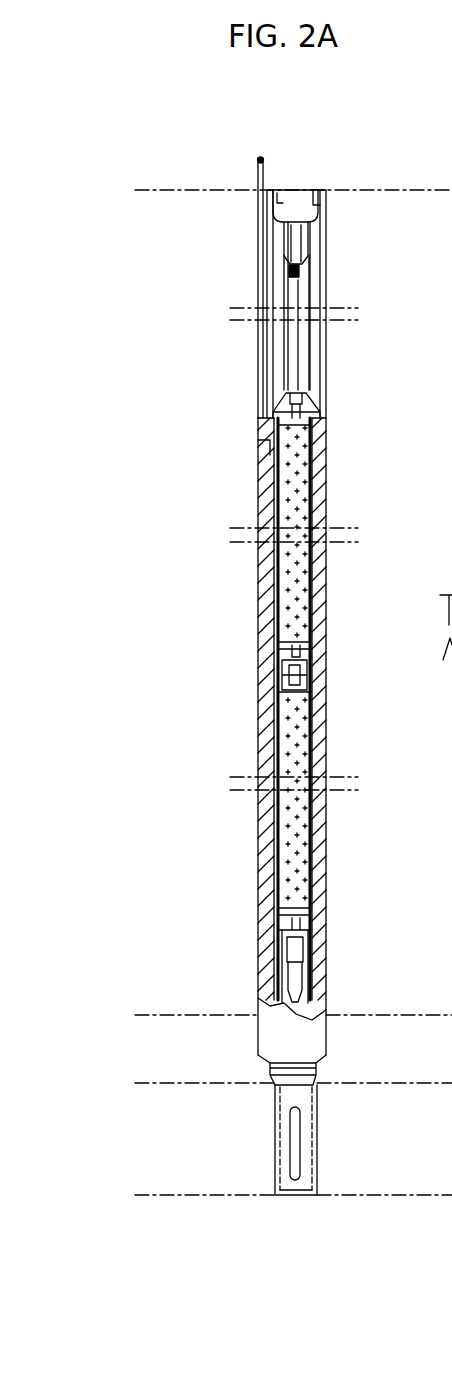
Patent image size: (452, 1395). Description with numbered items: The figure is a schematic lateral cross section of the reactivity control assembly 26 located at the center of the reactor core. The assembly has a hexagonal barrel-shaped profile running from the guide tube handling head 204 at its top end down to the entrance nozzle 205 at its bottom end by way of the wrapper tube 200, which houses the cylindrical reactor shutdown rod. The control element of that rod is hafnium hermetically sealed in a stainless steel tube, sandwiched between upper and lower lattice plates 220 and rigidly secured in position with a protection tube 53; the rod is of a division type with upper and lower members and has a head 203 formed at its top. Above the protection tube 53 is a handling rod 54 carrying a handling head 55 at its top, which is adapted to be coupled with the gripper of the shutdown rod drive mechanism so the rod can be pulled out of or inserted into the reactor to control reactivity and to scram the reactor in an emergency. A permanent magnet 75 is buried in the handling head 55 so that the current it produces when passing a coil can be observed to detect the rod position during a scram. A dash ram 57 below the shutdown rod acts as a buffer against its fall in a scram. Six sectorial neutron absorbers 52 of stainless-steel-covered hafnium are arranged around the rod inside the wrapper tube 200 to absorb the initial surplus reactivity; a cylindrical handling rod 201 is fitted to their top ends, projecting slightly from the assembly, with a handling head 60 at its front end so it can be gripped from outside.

The reactivity control assembly 26 is at (98, 283).
The neutron absorbers 52 is at (265, 713).
The protection tube 53 is at (268, 750).
The handling rod 54 is at (296, 359).
The handling head 55 is at (300, 242).
The dash ram 57 is at (298, 959).
The handling head 60 is at (258, 158).
The permanent magnet 75 is at (298, 273).
The wrapper tube 200 is at (258, 883).
The handling rod 201 is at (258, 178).
The head 203 is at (280, 410).
The guide tube handling head 204 is at (298, 205).
The entrance nozzle 205 is at (305, 1137).
The lattice plates 220 is at (258, 447).